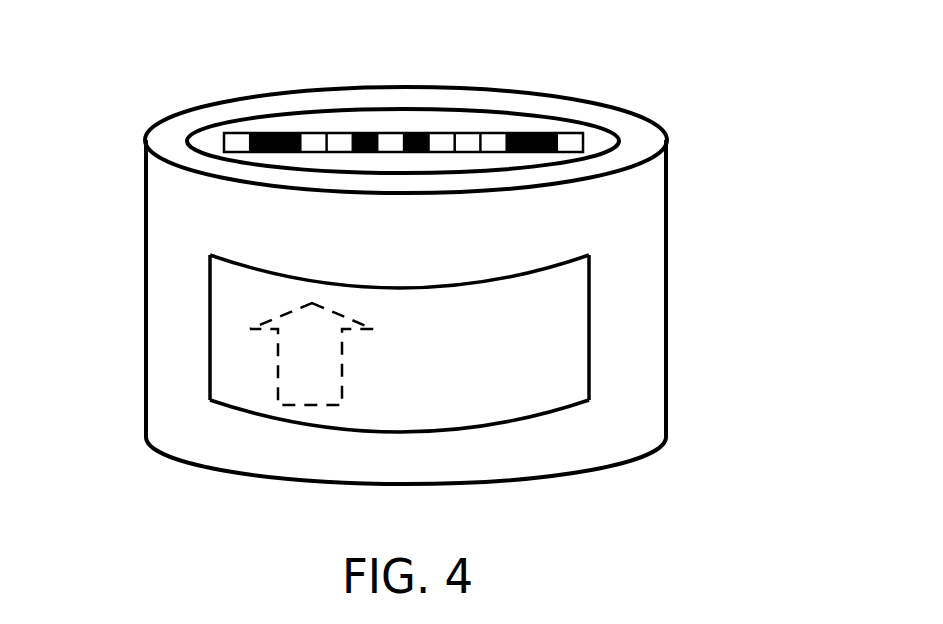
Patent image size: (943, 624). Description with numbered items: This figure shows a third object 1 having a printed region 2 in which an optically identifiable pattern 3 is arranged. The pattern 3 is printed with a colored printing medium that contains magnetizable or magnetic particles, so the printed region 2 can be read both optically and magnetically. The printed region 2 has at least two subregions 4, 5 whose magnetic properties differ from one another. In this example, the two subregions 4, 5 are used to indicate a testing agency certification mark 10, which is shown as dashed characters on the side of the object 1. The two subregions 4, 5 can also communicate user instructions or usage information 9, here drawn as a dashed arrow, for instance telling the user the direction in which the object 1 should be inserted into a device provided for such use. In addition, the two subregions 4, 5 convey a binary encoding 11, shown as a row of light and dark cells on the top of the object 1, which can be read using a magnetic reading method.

The object 1 is at (596, 103).
The printed region 2 is at (712, 241).
The pattern 3 is at (310, 126).
The subregion 4 is at (570, 352).
The subregion 5 is at (548, 373).
The usage information 9 is at (303, 407).
The testing agency certification mark 10 is at (625, 406).
The binary encoding 11 is at (338, 133).